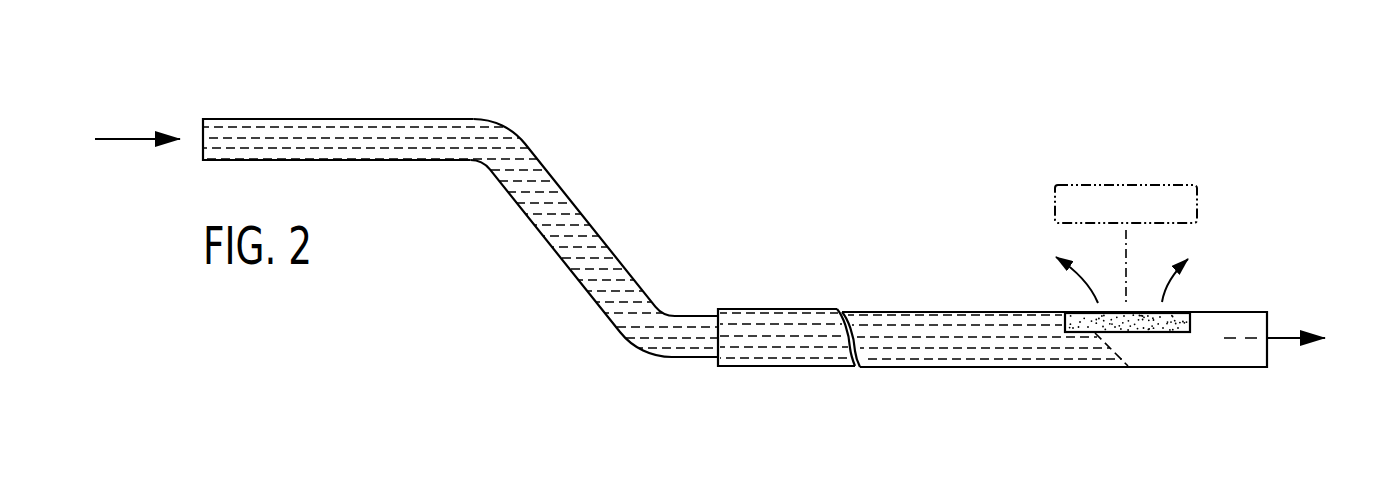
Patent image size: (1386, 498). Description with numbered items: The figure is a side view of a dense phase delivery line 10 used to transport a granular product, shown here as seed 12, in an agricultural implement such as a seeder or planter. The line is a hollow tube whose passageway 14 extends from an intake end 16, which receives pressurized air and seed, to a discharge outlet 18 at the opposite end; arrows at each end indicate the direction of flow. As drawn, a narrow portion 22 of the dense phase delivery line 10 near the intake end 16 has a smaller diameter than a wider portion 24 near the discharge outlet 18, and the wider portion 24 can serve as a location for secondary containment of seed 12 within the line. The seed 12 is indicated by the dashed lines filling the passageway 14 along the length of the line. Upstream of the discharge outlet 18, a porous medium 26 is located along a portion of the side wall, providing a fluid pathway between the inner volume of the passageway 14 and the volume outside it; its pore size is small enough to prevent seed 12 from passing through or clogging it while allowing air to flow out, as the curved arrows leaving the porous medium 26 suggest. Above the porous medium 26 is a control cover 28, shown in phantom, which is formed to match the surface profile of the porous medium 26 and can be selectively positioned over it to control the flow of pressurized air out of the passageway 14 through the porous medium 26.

The dense phase delivery line 10 is at (634, 177).
The seed 12 is at (401, 143).
The passageway 14 is at (1143, 357).
The intake end 16 is at (202, 128).
The discharge outlet 18 is at (1268, 353).
The narrow portion 22 is at (291, 106).
The wider portion 24 is at (989, 382).
The porous medium 26 is at (1175, 317).
The control cover 28 is at (1110, 185).